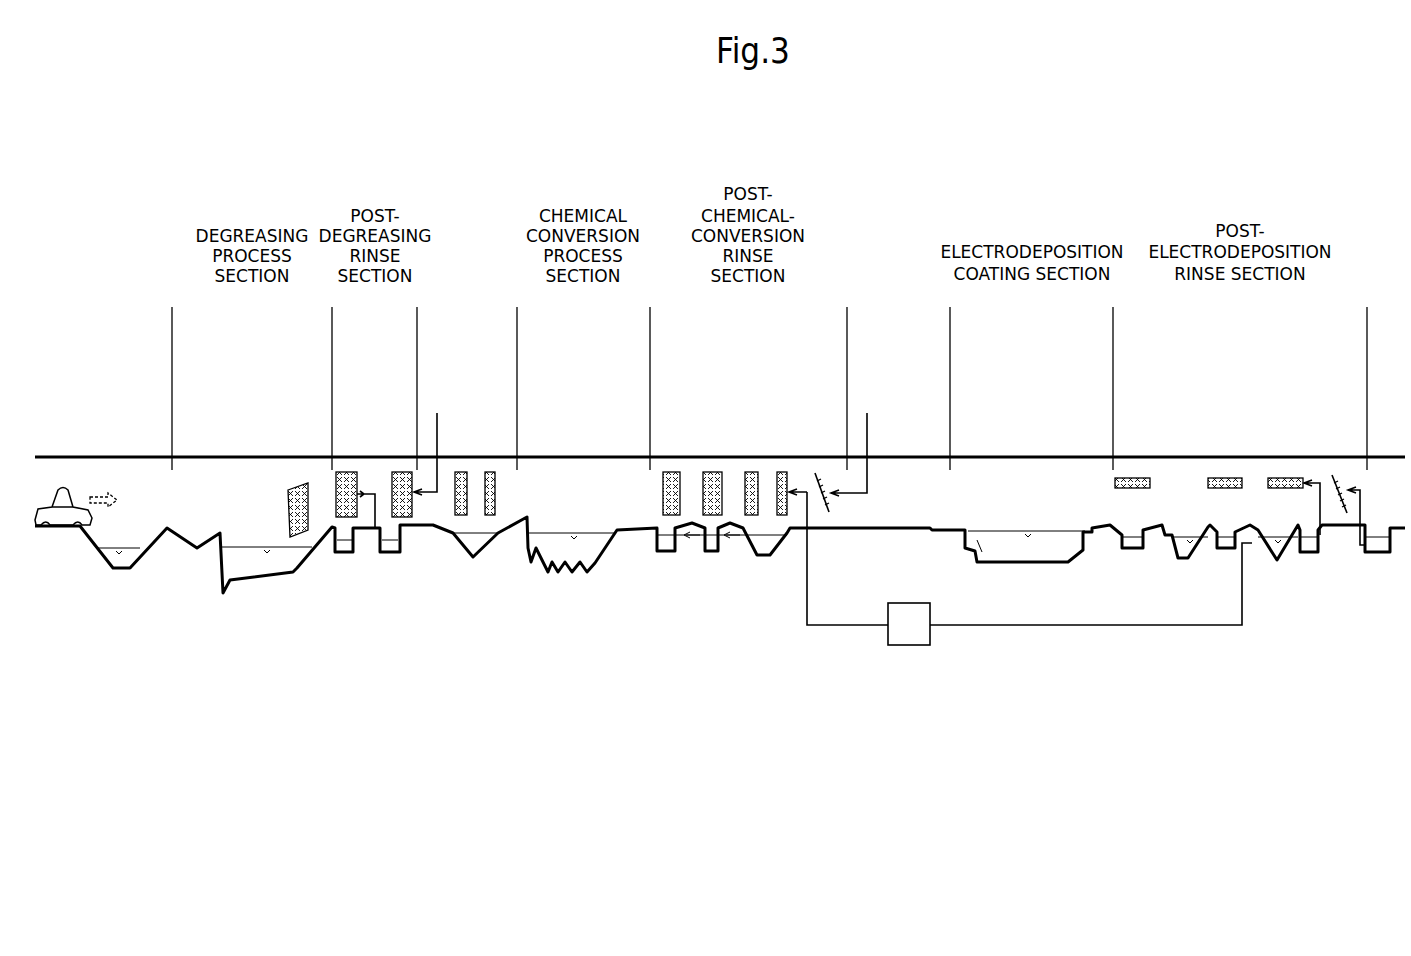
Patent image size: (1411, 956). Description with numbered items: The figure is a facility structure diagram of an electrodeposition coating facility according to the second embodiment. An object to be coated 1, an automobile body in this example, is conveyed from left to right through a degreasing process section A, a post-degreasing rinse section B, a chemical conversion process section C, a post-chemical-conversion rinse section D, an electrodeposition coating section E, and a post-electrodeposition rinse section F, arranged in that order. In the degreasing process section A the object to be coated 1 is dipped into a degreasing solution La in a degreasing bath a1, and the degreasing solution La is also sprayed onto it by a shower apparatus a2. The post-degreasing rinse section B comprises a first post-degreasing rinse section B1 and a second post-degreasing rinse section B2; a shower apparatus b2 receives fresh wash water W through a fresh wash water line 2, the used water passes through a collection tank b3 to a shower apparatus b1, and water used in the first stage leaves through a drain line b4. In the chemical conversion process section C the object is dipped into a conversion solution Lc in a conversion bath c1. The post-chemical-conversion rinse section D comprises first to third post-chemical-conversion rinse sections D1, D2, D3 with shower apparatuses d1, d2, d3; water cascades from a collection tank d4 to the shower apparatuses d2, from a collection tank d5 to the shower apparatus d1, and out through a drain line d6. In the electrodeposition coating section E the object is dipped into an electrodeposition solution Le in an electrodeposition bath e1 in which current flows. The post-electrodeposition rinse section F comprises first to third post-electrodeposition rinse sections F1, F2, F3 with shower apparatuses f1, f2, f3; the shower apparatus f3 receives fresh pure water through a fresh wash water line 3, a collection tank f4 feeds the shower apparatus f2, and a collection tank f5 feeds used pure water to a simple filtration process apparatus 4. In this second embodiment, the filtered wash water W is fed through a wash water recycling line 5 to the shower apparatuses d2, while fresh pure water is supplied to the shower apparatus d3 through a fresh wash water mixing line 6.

The object to be coated 1 is at (66, 528).
The wash water W is at (1387, 509).
The fresh wash water line 2 is at (440, 430).
The fresh wash water line 3 is at (1383, 350).
The simple filtration process apparatus 4 is at (909, 624).
The wash water recycling line 5 is at (812, 607).
The fresh wash water mixing line 6 is at (869, 432).
The degreasing process section A is at (172, 320).
The post-degreasing rinse section B is at (332, 320).
The chemical conversion process section C is at (517, 320).
The post-chemical-conversion rinse section D is at (650, 320).
The electrodeposition coating section E is at (950, 320).
The post-electrodeposition rinse section F is at (1113, 320).
The degreasing solution La is at (243, 546).
The degreasing bath a1 is at (262, 580).
The shower apparatus a2 is at (290, 505).
The first post-degreasing rinse section B1 is at (349, 453).
The second post-degreasing rinse section B2 is at (404, 453).
The shower apparatus b1 is at (336, 490).
The shower apparatus b2 is at (412, 500).
The collection tank b3 is at (392, 556).
The drain line b4 is at (330, 578).
The conversion solution Lc is at (558, 532).
The conversion bath c1 is at (572, 575).
The first post-chemical-conversion rinse section D1 is at (675, 452).
The second post-chemical-conversion rinse section D2 is at (746, 452).
The third post-chemical-conversion rinse section D3 is at (830, 453).
The shower apparatuses d1 is at (709, 474).
The shower apparatuses d2 is at (782, 474).
The shower apparatus d3 is at (832, 503).
The collection tank d4 is at (830, 513).
The collection tank d5 is at (770, 558).
The drain line d6 is at (652, 578).
The electrodeposition solution Le is at (1053, 530).
The electrodeposition bath e1 is at (1018, 562).
The first post-electrodeposition rinse section F1 is at (1139, 452).
The second post-electrodeposition rinse section F2 is at (1274, 452).
The third post-electrodeposition rinse section F3 is at (1345, 453).
The shower apparatuses f1 is at (1150, 478).
The shower apparatus f2 is at (1288, 478).
The shower apparatus f3 is at (1343, 507).
The collection tank f4 is at (1345, 535).
The collection tank f5 is at (1278, 560).